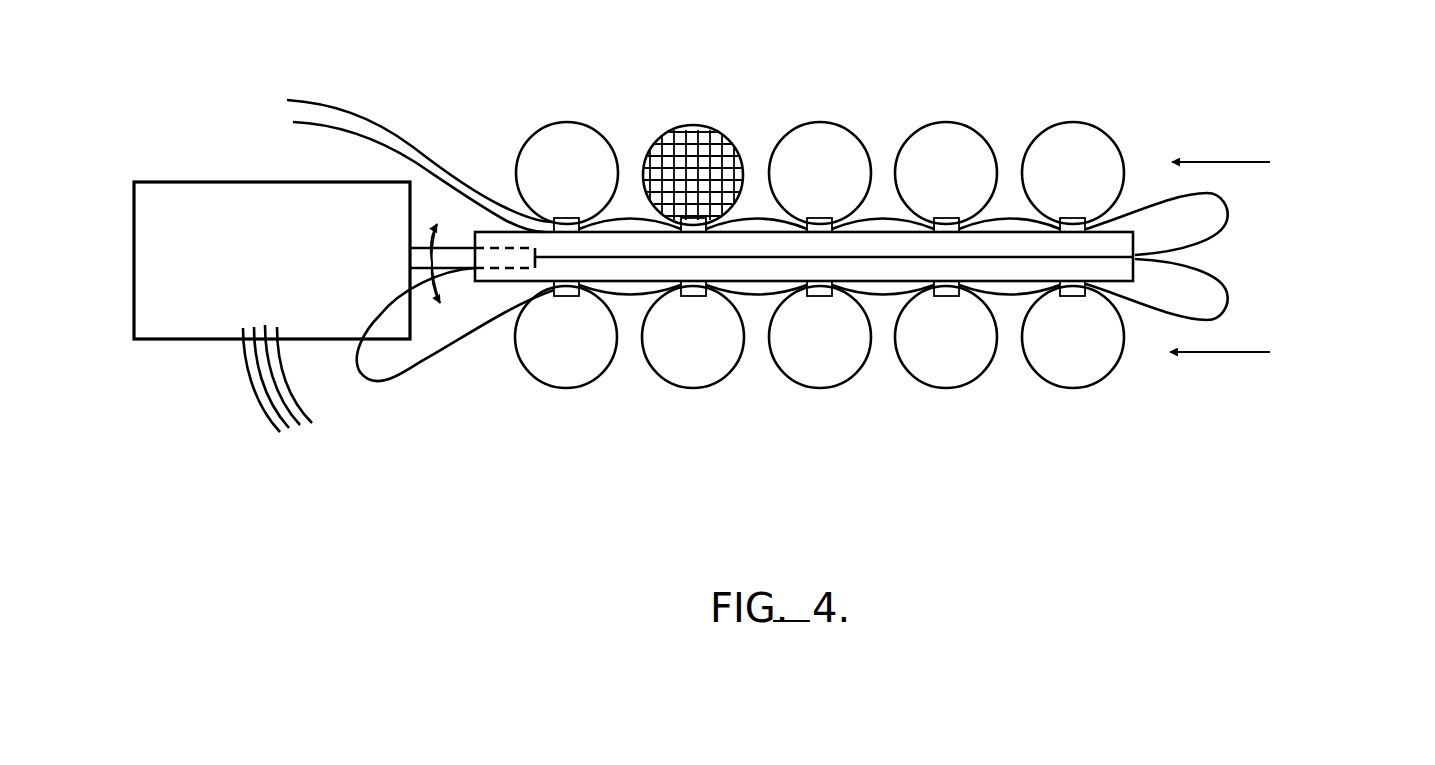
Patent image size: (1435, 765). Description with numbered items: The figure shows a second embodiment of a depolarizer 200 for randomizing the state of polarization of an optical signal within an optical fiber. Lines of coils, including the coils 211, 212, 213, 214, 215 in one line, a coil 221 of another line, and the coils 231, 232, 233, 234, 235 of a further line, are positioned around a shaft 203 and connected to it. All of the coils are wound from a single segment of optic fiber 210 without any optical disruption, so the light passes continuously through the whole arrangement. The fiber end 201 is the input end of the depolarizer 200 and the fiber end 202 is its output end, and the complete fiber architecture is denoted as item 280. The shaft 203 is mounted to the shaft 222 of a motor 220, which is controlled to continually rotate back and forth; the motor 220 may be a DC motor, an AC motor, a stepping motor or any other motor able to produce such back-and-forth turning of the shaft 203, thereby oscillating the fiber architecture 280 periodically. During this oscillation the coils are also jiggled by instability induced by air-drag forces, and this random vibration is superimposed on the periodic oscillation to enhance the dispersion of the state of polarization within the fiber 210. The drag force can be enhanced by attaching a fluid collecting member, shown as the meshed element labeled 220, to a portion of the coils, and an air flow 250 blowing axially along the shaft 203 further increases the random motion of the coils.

The depolarizer 200 is at (1104, 470).
The fiber end 201 is at (325, 100).
The fiber end 202 is at (327, 122).
The shaft 203 is at (630, 268).
The optic fiber 210 is at (1220, 238).
The coil 211 is at (568, 122).
The coil 212 is at (695, 125).
The coil 213 is at (827, 125).
The coil 214 is at (953, 125).
The coil 215 is at (1080, 125).
The motor 220 is at (225, 302).
The coil 221 is at (283, 398).
The motor shaft 222 is at (453, 247).
The coil 231 is at (549, 387).
The coil 232 is at (712, 390).
The coil 233 is at (820, 388).
The coil 234 is at (945, 388).
The coil 235 is at (1073, 388).
The air flow 250 is at (1194, 132).
The fiber architecture 280 is at (768, 406).